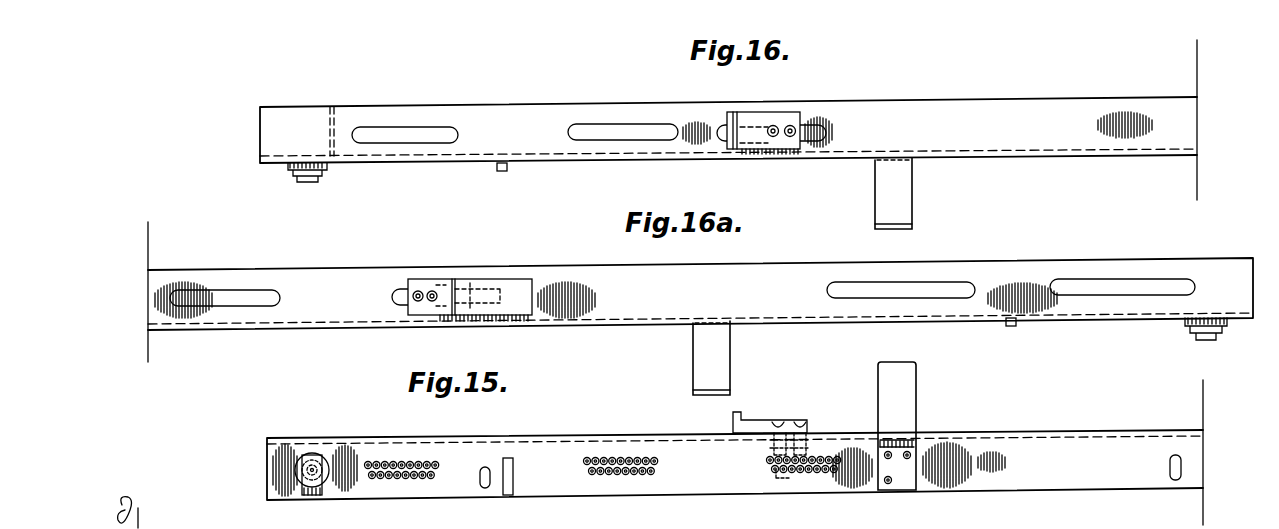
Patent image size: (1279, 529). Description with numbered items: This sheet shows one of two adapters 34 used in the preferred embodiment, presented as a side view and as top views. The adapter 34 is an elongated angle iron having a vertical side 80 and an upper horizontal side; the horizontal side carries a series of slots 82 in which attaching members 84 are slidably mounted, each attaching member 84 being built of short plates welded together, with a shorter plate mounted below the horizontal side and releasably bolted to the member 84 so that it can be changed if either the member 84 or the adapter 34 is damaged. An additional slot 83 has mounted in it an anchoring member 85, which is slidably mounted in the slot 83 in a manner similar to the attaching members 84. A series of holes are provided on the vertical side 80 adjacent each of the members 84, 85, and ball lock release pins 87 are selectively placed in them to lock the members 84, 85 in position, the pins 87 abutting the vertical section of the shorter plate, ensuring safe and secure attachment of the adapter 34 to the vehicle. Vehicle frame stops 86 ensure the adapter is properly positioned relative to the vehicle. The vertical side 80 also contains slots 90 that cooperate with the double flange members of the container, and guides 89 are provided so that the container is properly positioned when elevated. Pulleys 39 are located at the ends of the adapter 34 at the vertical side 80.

In FIG. 16, the adapter 34 is at (970, 137).
In FIG. 15, the adapter 34 is at (1112, 472).
In FIG. 16, the pulley 39 is at (300, 172).
In FIG. 15, the pulley 39 is at (314, 452).
In FIG. 15, the vertical side 80 is at (1035, 447).
In FIG. 16, the slot 82 is at (415, 135).
In FIG. 16A, the slot 82 is at (245, 295).
In FIG. 16, the additional slot 83 is at (822, 128).
In FIG. 15, the additional slot 83 is at (771, 445).
In FIG. 16A, the attaching member 84 is at (512, 287).
In FIG. 16, the anchoring member 85 is at (747, 130).
In FIG. 16, the vehicle frame stop 86 is at (900, 206).
In FIG. 16A, the vehicle frame stop 86 is at (715, 362).
In FIG. 15, the vehicle frame stop 86 is at (900, 405).
In FIG. 16, the ball lock release pin 87 is at (1040, 110).
In FIG. 16A, the ball lock release pin 87 is at (705, 275).
In FIG. 16, the guide 89 is at (504, 172).
In FIG. 16A, the guide 89 is at (1012, 327).
In FIG. 15, the guide 89 is at (508, 488).
In FIG. 15, the slot 90 is at (488, 466).